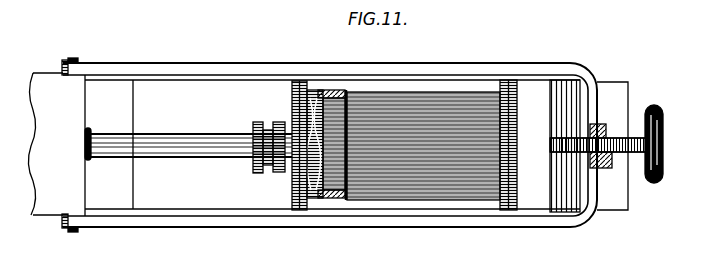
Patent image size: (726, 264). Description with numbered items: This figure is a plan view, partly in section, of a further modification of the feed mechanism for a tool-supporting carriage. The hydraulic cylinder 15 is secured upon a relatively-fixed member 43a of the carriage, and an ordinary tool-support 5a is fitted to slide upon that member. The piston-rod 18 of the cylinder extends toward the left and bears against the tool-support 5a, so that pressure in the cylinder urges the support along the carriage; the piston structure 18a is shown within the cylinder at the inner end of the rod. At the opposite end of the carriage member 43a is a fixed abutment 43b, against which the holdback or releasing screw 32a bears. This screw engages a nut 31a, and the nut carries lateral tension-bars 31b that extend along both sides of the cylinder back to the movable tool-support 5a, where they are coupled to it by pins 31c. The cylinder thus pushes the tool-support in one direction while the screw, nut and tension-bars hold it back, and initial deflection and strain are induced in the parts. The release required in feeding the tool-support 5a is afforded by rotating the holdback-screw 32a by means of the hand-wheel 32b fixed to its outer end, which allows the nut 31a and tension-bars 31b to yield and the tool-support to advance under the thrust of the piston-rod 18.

The tool-support 5a is at (46, 144).
The tension-bars 31b is at (330, 148).
The pins 31c is at (70, 58).
The relatively-fixed member 43a is at (332, 145).
The piston-rod 18 is at (177, 141).
The piston 18a is at (333, 89).
The hydraulic cylinder 15 is at (404, 145).
The fixed abutment 43b is at (550, 146).
The holdback or releasing screw 32a is at (618, 134).
The nut 31a is at (607, 169).
The hand-wheel 32b is at (663, 120).